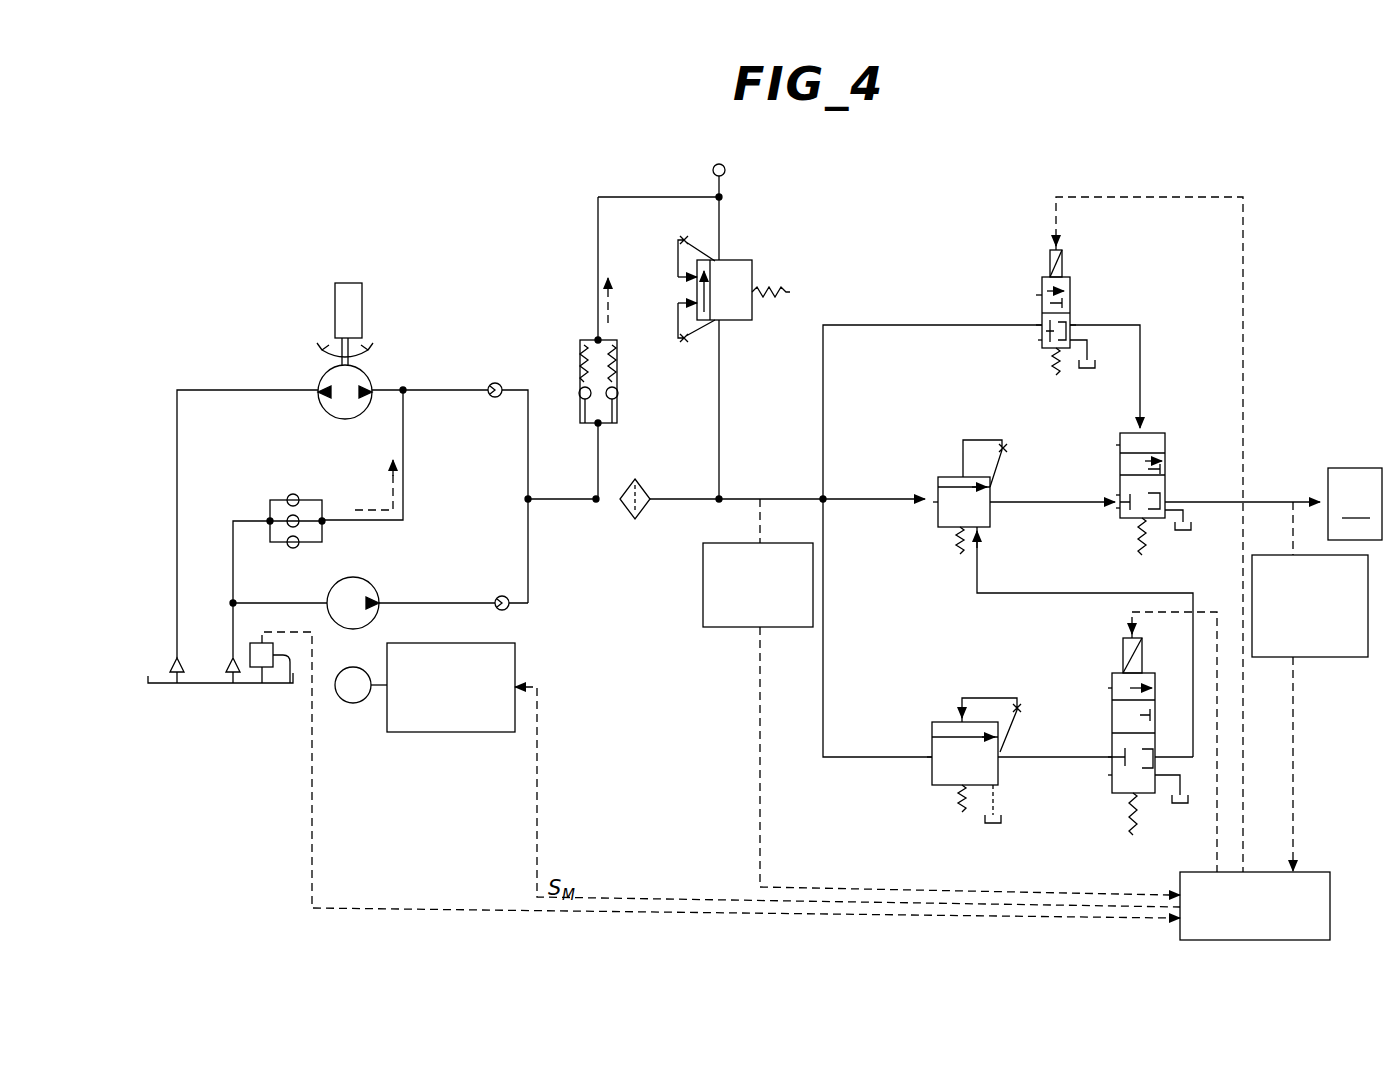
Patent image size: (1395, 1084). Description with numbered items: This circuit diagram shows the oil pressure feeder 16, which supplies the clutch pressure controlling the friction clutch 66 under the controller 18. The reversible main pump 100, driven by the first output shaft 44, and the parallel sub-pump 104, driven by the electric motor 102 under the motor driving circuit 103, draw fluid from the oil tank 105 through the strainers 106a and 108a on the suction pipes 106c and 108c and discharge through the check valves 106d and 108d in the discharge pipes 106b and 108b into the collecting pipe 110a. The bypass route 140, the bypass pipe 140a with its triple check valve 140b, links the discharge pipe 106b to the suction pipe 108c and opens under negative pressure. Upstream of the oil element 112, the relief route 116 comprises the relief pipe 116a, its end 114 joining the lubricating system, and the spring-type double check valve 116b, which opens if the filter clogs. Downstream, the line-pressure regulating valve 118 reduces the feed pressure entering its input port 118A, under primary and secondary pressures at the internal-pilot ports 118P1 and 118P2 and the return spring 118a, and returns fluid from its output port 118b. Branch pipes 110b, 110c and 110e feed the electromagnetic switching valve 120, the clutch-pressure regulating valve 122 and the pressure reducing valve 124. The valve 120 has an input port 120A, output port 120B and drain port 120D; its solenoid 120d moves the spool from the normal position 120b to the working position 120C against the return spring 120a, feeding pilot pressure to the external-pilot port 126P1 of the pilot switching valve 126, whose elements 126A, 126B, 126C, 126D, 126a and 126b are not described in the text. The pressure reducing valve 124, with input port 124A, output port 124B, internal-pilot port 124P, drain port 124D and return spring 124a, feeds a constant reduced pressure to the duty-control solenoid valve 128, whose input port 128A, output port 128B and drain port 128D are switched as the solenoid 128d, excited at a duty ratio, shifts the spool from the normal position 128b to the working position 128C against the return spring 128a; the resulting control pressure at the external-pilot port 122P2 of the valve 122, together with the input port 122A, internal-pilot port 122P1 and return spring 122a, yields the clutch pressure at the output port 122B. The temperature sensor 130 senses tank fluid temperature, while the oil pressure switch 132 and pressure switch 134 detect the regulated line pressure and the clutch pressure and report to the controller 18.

The oil pressure feeder 16 is at (520, 228).
The controller 18 is at (1305, 872).
The first output shaft 44 is at (335, 300).
The friction clutch 66 is at (1355, 504).
The main pump 100 is at (360, 376).
The electric motor 102 is at (353, 704).
The motor driving circuit 103 is at (455, 733).
The sub-pump 104 is at (377, 592).
The oil tank 105 is at (238, 688).
The strainer 106a is at (176, 686).
The discharge pipe 106b is at (440, 390).
The suction pipe 106c is at (205, 390).
The check valve 106d is at (497, 383).
The strainer 108a is at (233, 686).
The discharge pipe 108b is at (400, 605).
The suction pipe 108c is at (272, 603).
The check valve 108d is at (512, 609).
The collecting pipe 110a is at (578, 501).
The pipe 110b is at (900, 325).
The pipe 110c is at (858, 499).
The pipe 110e is at (845, 757).
The oil element 112 is at (640, 516).
The lubricating system end 114 is at (726, 172).
The relief route 116 is at (580, 338).
The relief pipe 116a is at (598, 268).
The double check valve 116b is at (619, 396).
The line-pressure regulating valve 118 is at (781, 266).
The return spring 118a is at (784, 292).
The output port 118b is at (716, 262).
The input port 118A is at (721, 322).
The internal-pilot port 118P1 is at (692, 306).
The internal-pilot port 118P2 is at (696, 288).
The electromagnetic switching valve 120 is at (1032, 240).
The input port 120A is at (1042, 325).
The output port 120B is at (1070, 316).
The working position 120C is at (1042, 295).
The drain port 120D is at (1088, 370).
The return spring 120a is at (1052, 368).
The normal position 120b is at (1042, 340).
The solenoid 120d is at (1063, 265).
The clutch-pressure regulating valve 122 is at (935, 425).
The input port 122A is at (938, 492).
The output port 122B is at (992, 498).
The return spring 122a is at (952, 546).
The internal-pilot port 122P1 is at (963, 472).
The external-pilot port 122P2 is at (979, 536).
The pressure reducing valve 124 is at (935, 720).
The input port 124A is at (932, 748).
The output port 124B is at (998, 760).
The drain port 124D is at (1024, 811).
The internal-pilot port 124P is at (960, 714).
The return spring 124a is at (955, 802).
The pilot switching valve 126 is at (1158, 430).
The port 126A is at (1120, 495).
The output port 126B is at (1166, 500).
The port 126C is at (1120, 445).
The drain port 126D is at (1180, 531).
The spring 126a is at (1142, 555).
The valve body 126b is at (1120, 507).
The external-pilot port 126P1 is at (1145, 425).
The duty-control solenoid valve 128 is at (1105, 686).
The input port 128A is at (1112, 755).
The output port 128B is at (1158, 745).
The working position 128C is at (1112, 700).
The drain port 128D is at (1182, 803).
The return spring 128a is at (1128, 835).
The normal position 128b is at (1115, 780).
The solenoid 128d is at (1123, 660).
The temperature sensor 130 is at (715, 775).
The oil pressure switch 132 is at (712, 627).
The pressure switch 134 is at (1320, 657).
The bypass route 140 is at (257, 498).
The bypass pipe 140a is at (405, 463).
The triple check valve 140b is at (297, 494).